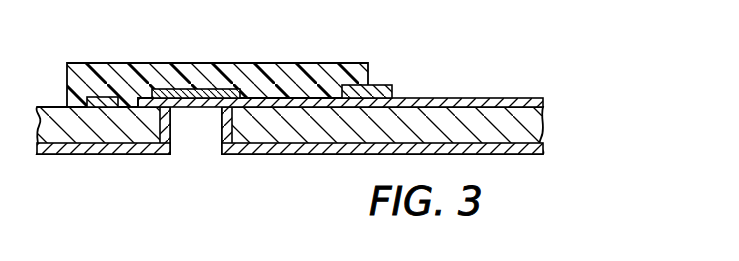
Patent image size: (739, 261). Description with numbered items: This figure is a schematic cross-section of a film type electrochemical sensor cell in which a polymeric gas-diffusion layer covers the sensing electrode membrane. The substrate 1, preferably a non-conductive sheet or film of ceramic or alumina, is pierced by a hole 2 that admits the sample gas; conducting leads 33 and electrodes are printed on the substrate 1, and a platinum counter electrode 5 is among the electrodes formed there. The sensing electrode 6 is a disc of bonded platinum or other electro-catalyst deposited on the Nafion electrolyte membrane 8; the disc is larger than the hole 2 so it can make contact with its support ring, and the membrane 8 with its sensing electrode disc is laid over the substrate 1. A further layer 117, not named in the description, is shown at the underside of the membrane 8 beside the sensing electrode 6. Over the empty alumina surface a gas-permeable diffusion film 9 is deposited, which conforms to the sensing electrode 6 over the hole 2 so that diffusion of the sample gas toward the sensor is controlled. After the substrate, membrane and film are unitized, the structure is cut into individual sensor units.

The substrate 1 is at (518, 124).
The hole 2 is at (201, 133).
The counter electrode 5 is at (99, 98).
The sensing electrode 6 is at (220, 88).
The Nafion electrolyte membrane 8 is at (147, 63).
The gas-permeable diffusion film 9 is at (167, 140).
The conducting lead 33 is at (498, 98).
The solder layer 117 is at (394, 85).